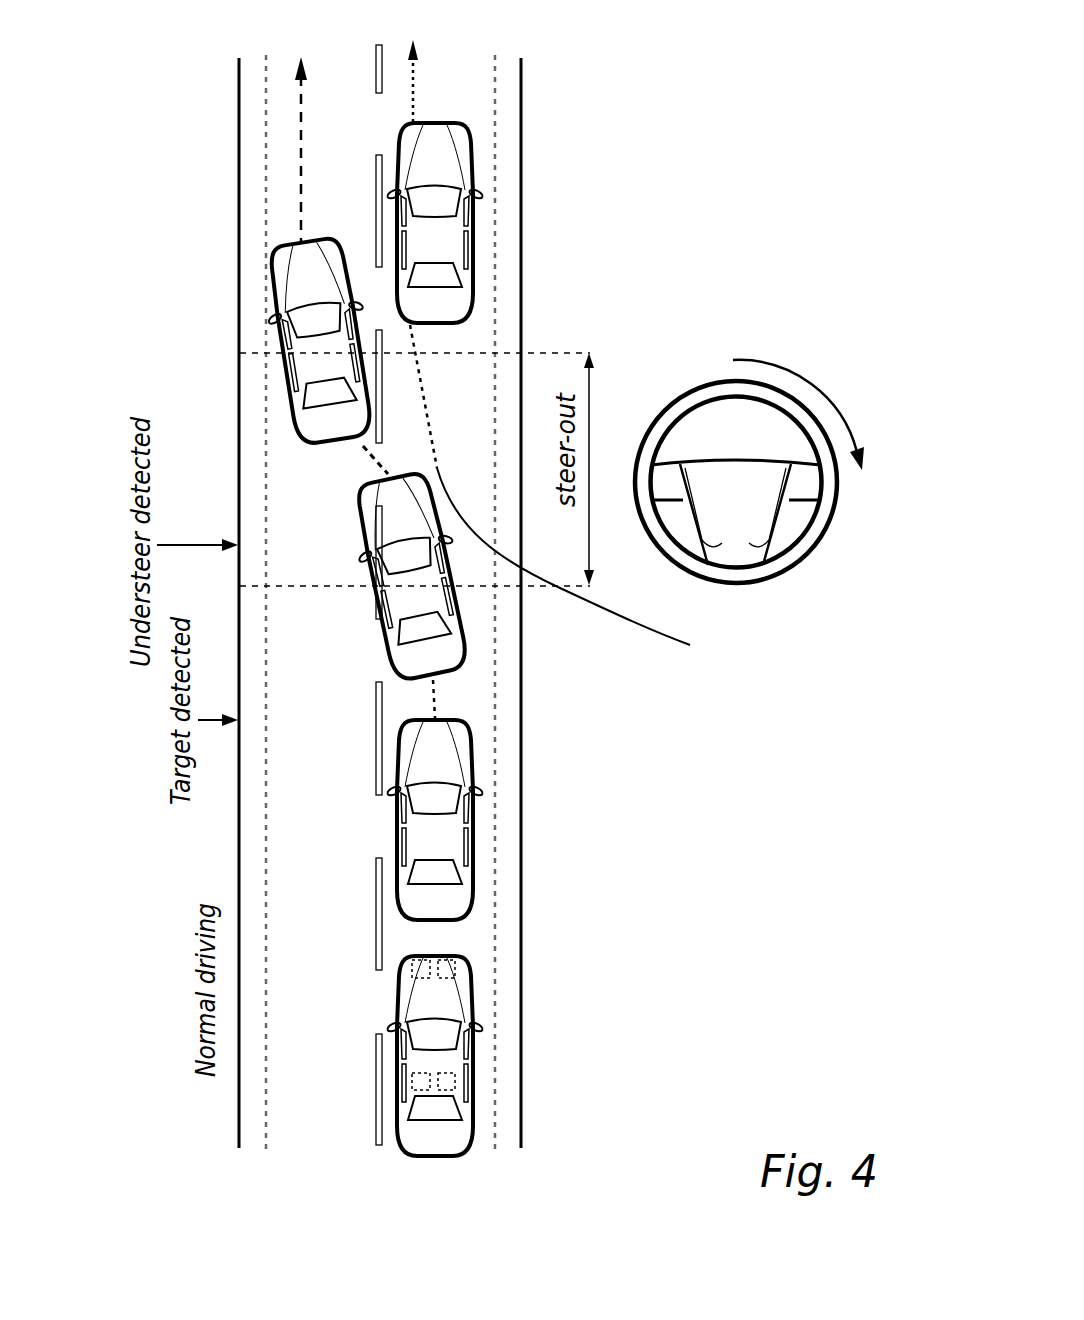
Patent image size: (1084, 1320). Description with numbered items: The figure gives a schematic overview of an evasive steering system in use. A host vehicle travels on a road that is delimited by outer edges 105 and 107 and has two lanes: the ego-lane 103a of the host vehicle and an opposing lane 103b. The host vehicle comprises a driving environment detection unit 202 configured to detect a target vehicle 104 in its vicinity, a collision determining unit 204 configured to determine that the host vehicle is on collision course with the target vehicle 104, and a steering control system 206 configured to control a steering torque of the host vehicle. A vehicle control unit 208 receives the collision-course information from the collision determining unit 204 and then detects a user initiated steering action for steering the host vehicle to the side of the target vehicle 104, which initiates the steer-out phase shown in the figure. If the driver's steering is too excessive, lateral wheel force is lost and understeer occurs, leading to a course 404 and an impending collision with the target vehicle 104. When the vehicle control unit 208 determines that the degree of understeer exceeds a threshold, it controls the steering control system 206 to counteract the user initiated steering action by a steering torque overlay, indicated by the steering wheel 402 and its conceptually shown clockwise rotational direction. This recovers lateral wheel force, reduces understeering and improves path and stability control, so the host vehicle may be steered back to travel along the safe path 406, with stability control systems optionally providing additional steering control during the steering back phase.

The outer edge 105 is at (237, 103).
The outer edge 107 is at (521, 878).
The ego-lane 103a is at (485, 764).
The opposing lane 103b is at (369, 1029).
The target vehicle 104 is at (470, 143).
The driving environment detection unit 202 is at (423, 965).
The collision determining unit 204 is at (448, 970).
The steering control system 206 is at (415, 1078).
The vehicle control unit 208 is at (448, 1080).
The steering wheel 402 is at (840, 541).
The course 404 is at (562, 501).
The safe path 406 is at (300, 192).